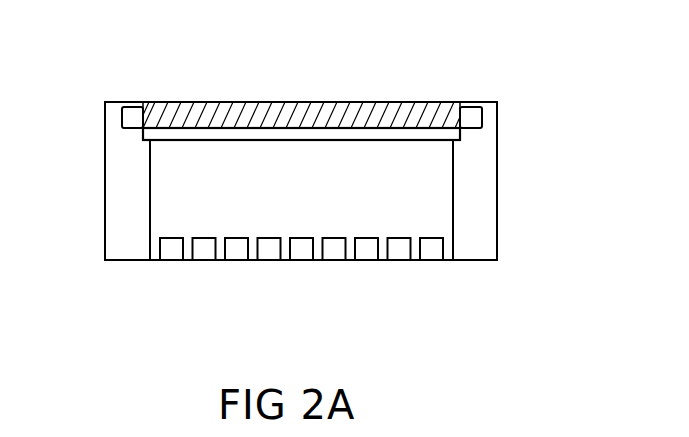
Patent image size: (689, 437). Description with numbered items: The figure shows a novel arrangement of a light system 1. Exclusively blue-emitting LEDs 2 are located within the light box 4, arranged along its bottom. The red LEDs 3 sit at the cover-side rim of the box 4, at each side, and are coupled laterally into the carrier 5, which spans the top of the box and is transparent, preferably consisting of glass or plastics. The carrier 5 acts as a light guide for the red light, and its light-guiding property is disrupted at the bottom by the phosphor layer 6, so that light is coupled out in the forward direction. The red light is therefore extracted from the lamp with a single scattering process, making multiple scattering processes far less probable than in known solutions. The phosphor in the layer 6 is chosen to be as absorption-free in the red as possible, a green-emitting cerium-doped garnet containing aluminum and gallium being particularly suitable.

The light system 1 is at (551, 105).
The blue-emitting LEDs 2 is at (432, 250).
The red LEDs 3 is at (133, 116).
The light box 4 is at (105, 183).
The carrier 5 is at (262, 114).
The phosphor layer 6 is at (378, 129).